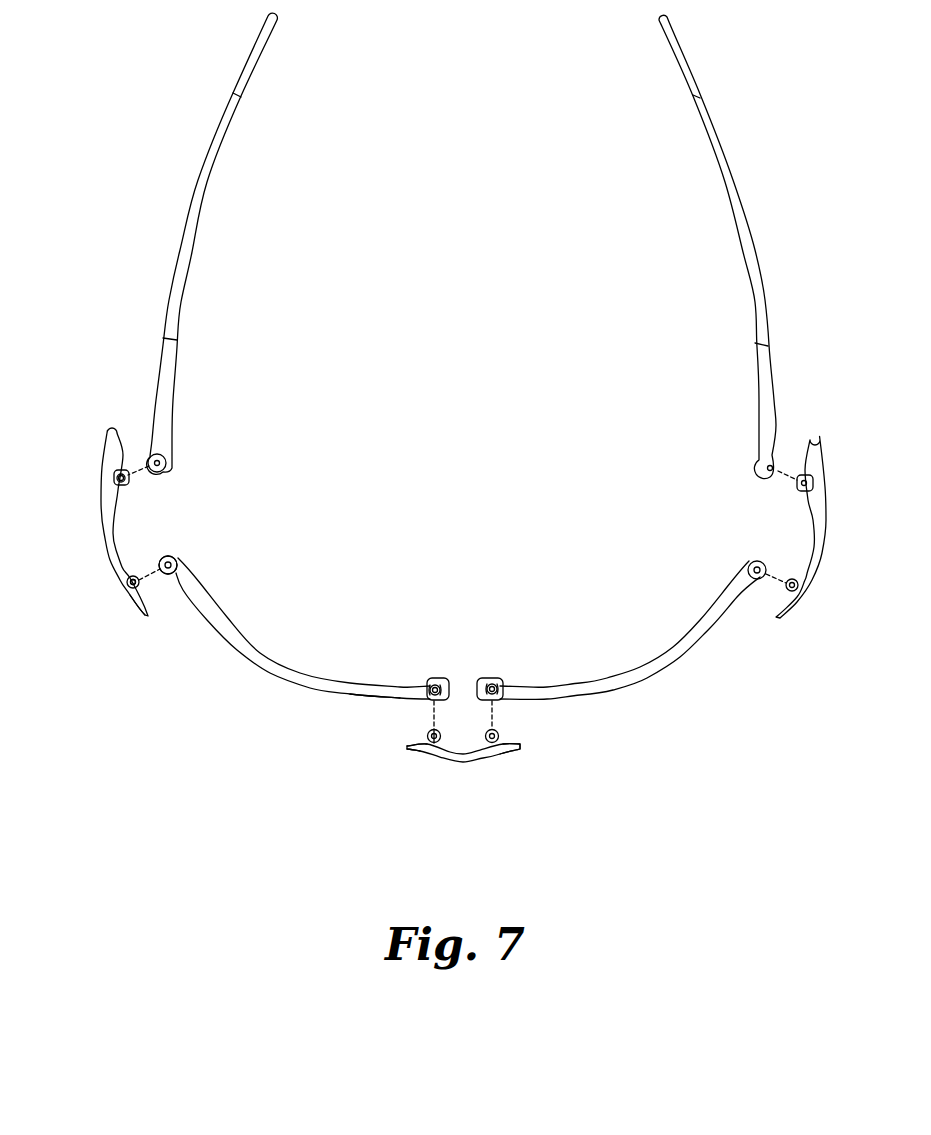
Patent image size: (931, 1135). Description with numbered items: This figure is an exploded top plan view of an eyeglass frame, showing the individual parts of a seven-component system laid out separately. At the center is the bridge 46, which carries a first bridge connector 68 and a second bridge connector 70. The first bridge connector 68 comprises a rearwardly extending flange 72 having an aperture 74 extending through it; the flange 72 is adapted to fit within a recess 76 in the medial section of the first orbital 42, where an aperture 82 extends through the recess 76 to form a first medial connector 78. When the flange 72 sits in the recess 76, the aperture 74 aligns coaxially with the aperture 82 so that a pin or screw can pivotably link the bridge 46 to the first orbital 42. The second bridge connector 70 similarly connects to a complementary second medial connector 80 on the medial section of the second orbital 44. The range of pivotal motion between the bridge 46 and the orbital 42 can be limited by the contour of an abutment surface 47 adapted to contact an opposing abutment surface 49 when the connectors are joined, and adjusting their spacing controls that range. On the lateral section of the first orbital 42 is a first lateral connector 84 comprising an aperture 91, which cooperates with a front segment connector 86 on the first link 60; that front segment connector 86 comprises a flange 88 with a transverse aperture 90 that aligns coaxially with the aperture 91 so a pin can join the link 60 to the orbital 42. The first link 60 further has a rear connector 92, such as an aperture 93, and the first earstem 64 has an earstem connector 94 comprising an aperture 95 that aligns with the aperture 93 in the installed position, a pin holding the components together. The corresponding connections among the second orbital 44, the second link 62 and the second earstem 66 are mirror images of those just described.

The first orbital 42 is at (257, 660).
The second orbital 44 is at (642, 675).
The bridge 46 is at (475, 762).
The abutment surface 47 is at (500, 737).
The opposing abutment surface 49 is at (513, 697).
The first link 60 is at (103, 530).
The second link 62 is at (826, 525).
The first earstem 64 is at (232, 113).
The second earstem 66 is at (713, 118).
The first bridge connector 68 is at (429, 766).
The second bridge connector 70 is at (523, 742).
The flange 72 is at (427, 738).
The aperture 74 is at (430, 764).
The recess 76 is at (428, 701).
The first medial connector 78 is at (432, 665).
The second medial connector 80 is at (499, 665).
The aperture 82 is at (428, 688).
The first lateral connector 84 is at (196, 547).
The front segment connector 86 is at (124, 615).
The flange 88 is at (127, 580).
The transverse aperture 90 is at (131, 585).
The aperture 91 is at (163, 577).
The rear connector 92 is at (92, 477).
The aperture 93 is at (128, 470).
The earstem connector 94 is at (186, 457).
The aperture 95 is at (162, 470).